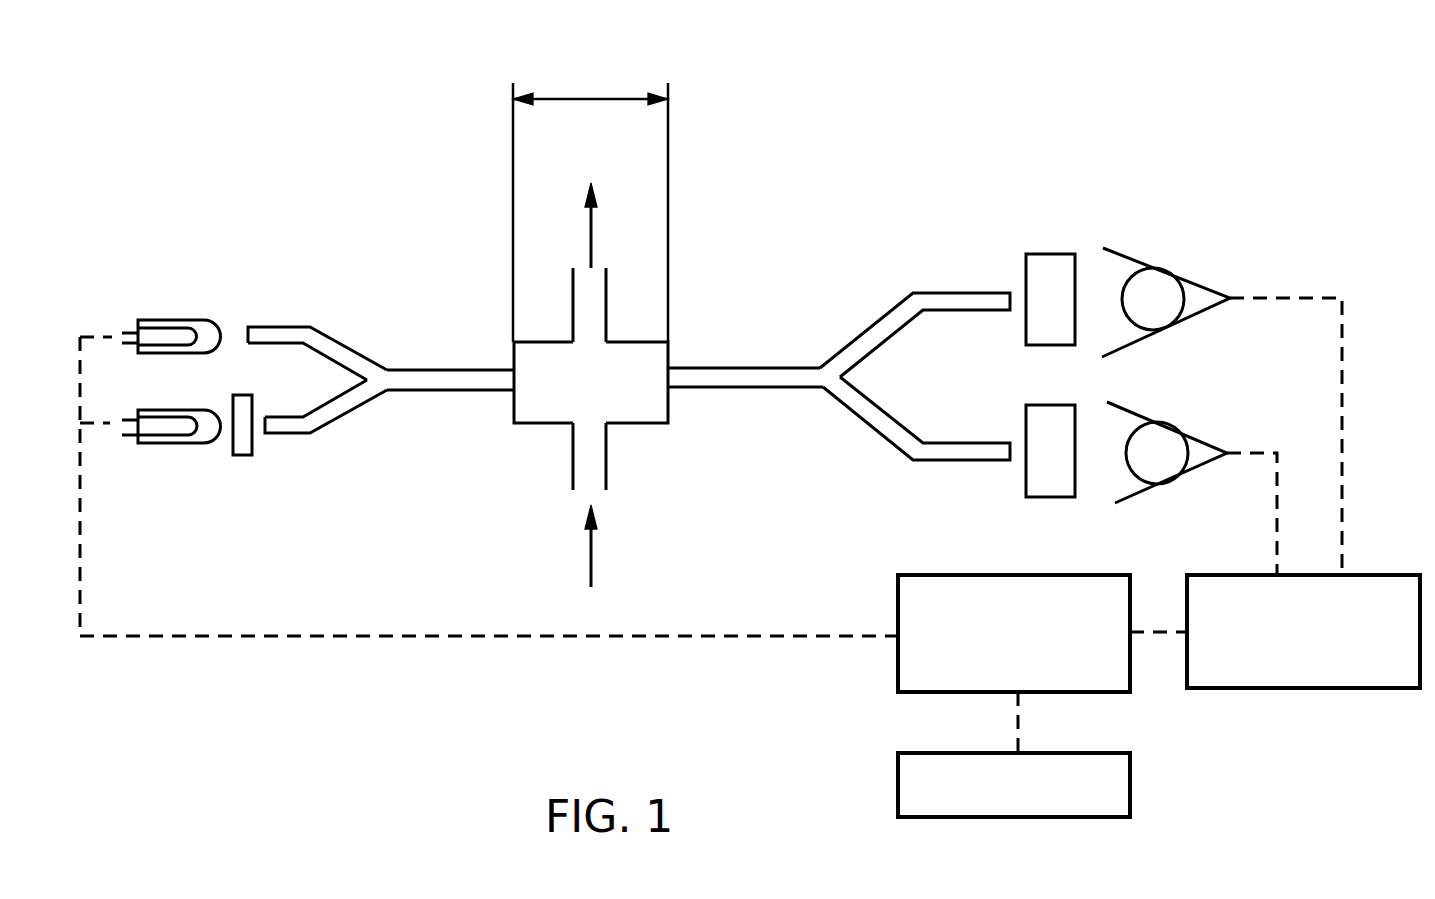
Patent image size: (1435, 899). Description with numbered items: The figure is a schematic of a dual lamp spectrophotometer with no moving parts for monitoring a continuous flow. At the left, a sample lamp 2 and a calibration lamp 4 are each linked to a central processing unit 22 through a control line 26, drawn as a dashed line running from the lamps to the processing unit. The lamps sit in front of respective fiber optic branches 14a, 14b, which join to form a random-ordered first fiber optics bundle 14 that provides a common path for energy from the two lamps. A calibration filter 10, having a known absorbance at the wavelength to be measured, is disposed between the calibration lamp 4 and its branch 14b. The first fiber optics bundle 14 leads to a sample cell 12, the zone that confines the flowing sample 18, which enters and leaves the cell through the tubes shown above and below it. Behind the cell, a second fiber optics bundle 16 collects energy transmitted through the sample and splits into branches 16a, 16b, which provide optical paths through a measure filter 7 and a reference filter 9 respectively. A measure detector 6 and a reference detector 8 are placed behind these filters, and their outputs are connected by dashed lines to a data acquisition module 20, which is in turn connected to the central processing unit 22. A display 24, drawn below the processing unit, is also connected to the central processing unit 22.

The sample lamp 2 is at (122, 298).
The calibration lamp 4 is at (137, 462).
The measure detector 6 is at (1257, 253).
The measure filter 7 is at (1025, 268).
The reference detector 8 is at (1250, 418).
The reference filter 9 is at (1023, 477).
The calibration filter 10 is at (236, 454).
The sample cell 12 is at (640, 382).
The first fiber optics bundle 14 is at (381, 391).
The fiber optic branch 14a is at (315, 328).
The fiber optic branch 14b is at (323, 435).
The second fiber optics bundle 16 is at (839, 385).
The branch 16a is at (900, 302).
The branch 16b is at (897, 452).
The sample 18 is at (593, 563).
The data acquisition module 20 is at (1268, 693).
The central processing unit 22 is at (898, 694).
The display 24 is at (1130, 785).
The control line 26 is at (440, 638).